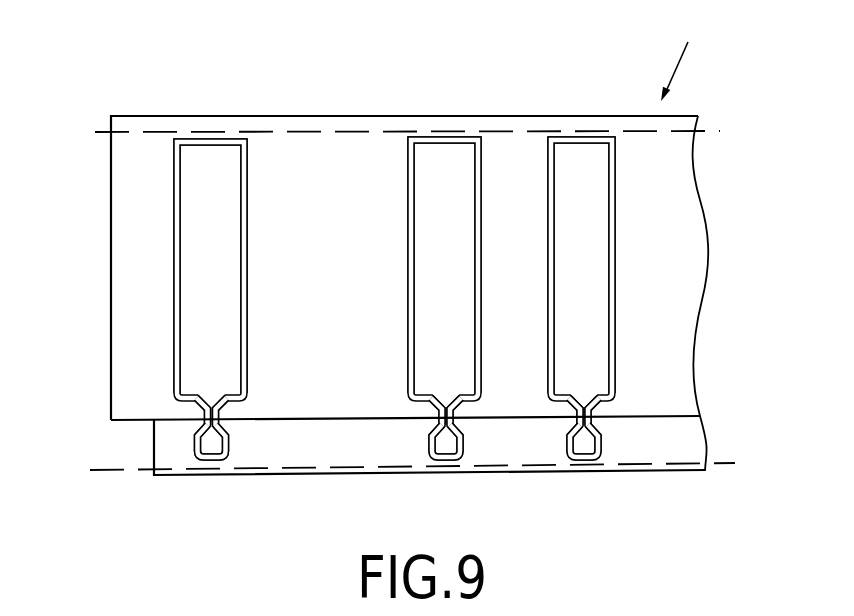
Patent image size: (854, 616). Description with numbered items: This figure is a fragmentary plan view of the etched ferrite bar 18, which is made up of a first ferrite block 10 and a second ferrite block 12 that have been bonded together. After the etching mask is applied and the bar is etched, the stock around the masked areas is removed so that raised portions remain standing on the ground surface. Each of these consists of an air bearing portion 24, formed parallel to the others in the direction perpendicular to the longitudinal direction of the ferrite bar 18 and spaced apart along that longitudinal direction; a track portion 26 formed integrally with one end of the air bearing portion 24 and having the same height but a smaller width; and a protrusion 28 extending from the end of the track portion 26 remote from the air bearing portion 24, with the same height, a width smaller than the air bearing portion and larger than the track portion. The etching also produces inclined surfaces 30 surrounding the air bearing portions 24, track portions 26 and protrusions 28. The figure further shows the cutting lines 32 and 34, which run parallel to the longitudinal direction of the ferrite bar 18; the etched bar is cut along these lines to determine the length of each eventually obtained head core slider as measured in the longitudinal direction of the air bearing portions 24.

The first ferrite block 10 is at (125, 275).
The second ferrite block 12 is at (162, 441).
The ferrite bar 18 is at (684, 52).
The air bearing portion 24 is at (451, 160).
The track portion 26 is at (215, 414).
The protrusion 28 is at (213, 447).
The inclined surface 30 is at (177, 328).
The cutting line 32 is at (333, 131).
The cutting line 34 is at (665, 468).